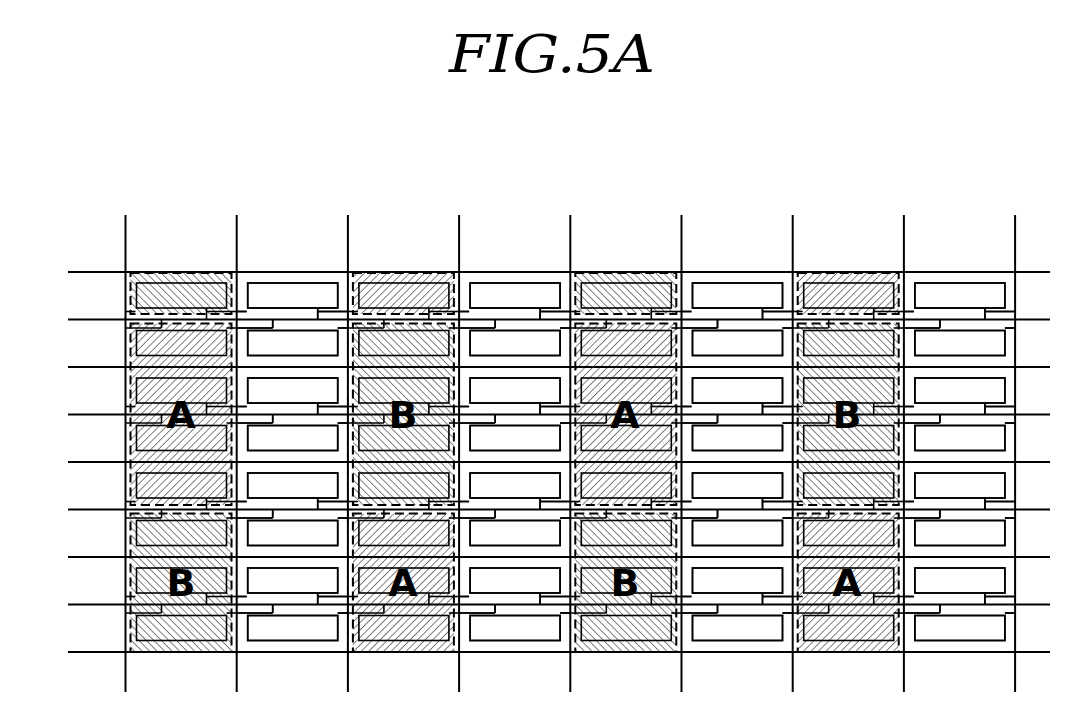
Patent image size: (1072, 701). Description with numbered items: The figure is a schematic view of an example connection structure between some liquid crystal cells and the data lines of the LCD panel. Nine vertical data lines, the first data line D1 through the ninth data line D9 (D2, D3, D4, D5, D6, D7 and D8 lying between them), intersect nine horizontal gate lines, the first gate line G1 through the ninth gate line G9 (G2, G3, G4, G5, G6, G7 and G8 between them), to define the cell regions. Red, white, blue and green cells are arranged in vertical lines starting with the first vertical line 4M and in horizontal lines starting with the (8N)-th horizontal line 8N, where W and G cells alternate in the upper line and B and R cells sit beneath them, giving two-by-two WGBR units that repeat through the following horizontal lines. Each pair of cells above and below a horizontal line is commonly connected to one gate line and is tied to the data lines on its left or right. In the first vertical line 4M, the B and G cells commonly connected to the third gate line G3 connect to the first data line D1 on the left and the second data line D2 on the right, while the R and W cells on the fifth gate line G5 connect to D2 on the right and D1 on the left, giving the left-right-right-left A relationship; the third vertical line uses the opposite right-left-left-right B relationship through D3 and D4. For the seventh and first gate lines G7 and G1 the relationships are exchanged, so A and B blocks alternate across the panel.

The first data line D1 is at (122, 440).
The second data line D2 is at (233, 440).
The third data line D3 is at (344, 440).
The fourth data line D4 is at (455, 440).
The fifth data line D5 is at (566, 440).
The sixth data line D6 is at (677, 440).
The seventh data line D7 is at (788, 440).
The eighth data line D8 is at (899, 440).
The ninth data line D9 is at (1010, 440).
The first gate line G1 is at (543, 273).
The second gate line G2 is at (543, 321).
The third gate line G3 is at (543, 368).
The fourth gate line G4 is at (543, 416).
The fifth gate line G5 is at (543, 463).
The sixth gate line G6 is at (543, 511).
The seventh gate line G7 is at (543, 558).
The eighth gate line G8 is at (543, 606).
The ninth gate line G9 is at (543, 653).
The first vertical line 4M is at (181, 448).
The (8N)-th horizontal line 8N is at (553, 301).